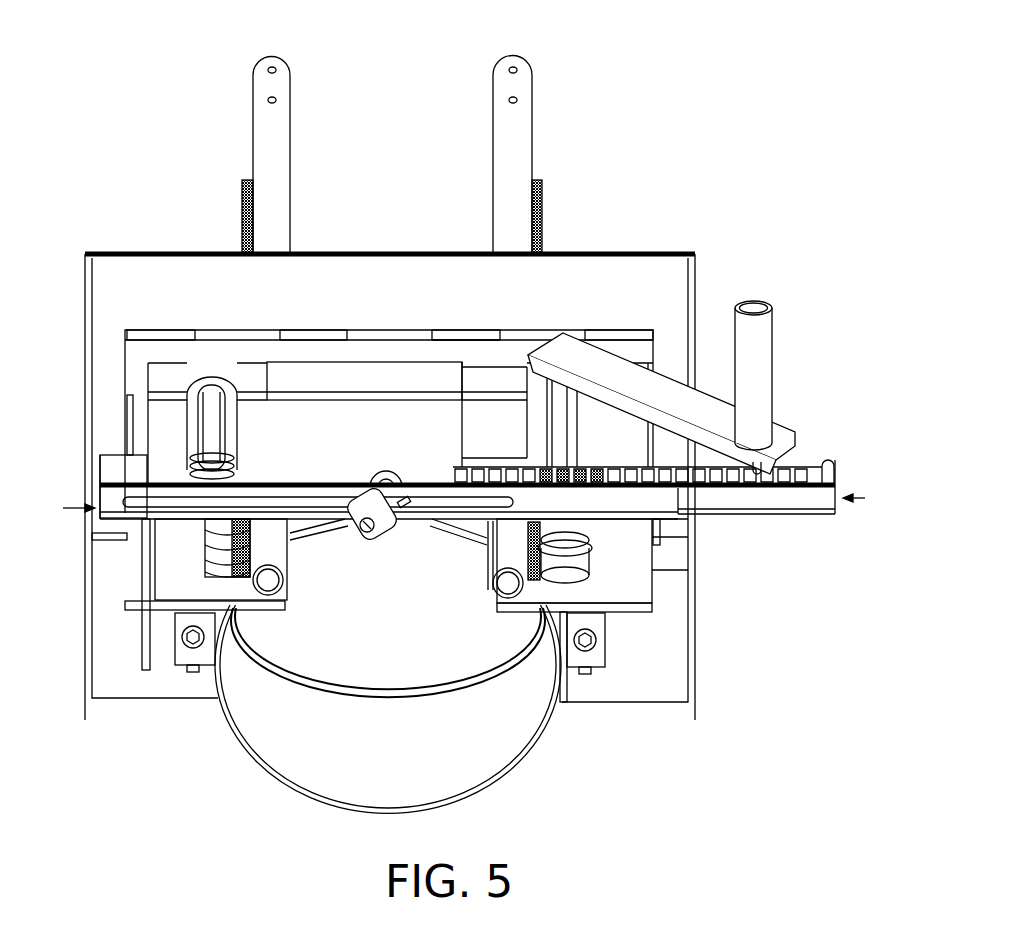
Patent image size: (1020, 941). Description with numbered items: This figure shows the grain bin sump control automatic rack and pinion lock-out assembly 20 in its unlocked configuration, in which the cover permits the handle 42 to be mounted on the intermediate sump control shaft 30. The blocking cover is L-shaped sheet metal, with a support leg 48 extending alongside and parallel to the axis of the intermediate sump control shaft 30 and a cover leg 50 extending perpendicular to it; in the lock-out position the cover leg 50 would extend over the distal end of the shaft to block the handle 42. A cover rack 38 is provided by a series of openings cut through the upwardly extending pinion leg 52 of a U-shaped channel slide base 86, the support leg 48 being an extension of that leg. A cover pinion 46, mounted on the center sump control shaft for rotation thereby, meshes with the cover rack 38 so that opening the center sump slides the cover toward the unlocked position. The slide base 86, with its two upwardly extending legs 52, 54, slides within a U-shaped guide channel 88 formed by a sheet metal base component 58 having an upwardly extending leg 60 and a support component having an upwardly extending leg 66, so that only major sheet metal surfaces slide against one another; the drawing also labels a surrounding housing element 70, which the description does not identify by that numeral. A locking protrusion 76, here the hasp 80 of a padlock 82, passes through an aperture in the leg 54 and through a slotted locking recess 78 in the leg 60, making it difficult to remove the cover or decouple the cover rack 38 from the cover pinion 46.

The automatic rack and pinion lock-out assembly 20 is at (632, 66).
The intermediate sump control shaft 30 is at (212, 385).
The cover rack 38 is at (617, 444).
The handle 42 is at (612, 368).
The cover pinion 46 is at (553, 470).
The support leg 48 is at (377, 400).
The cover leg 50 is at (388, 365).
The pinion leg 52 is at (808, 462).
The upwardly extending leg 54 is at (795, 498).
The sheet metal base component 58 is at (665, 520).
The upwardly extending leg 60 is at (665, 500).
The upwardly extending leg 66 is at (160, 420).
The housing 70 is at (158, 380).
The locking protrusion 76 is at (408, 503).
The locking recess 78 is at (195, 500).
The hasp 80 is at (380, 497).
The padlock 82 is at (360, 498).
The U-shaped channel slide base 86 is at (865, 498).
The U-shaped guide channel 88 is at (63, 508).